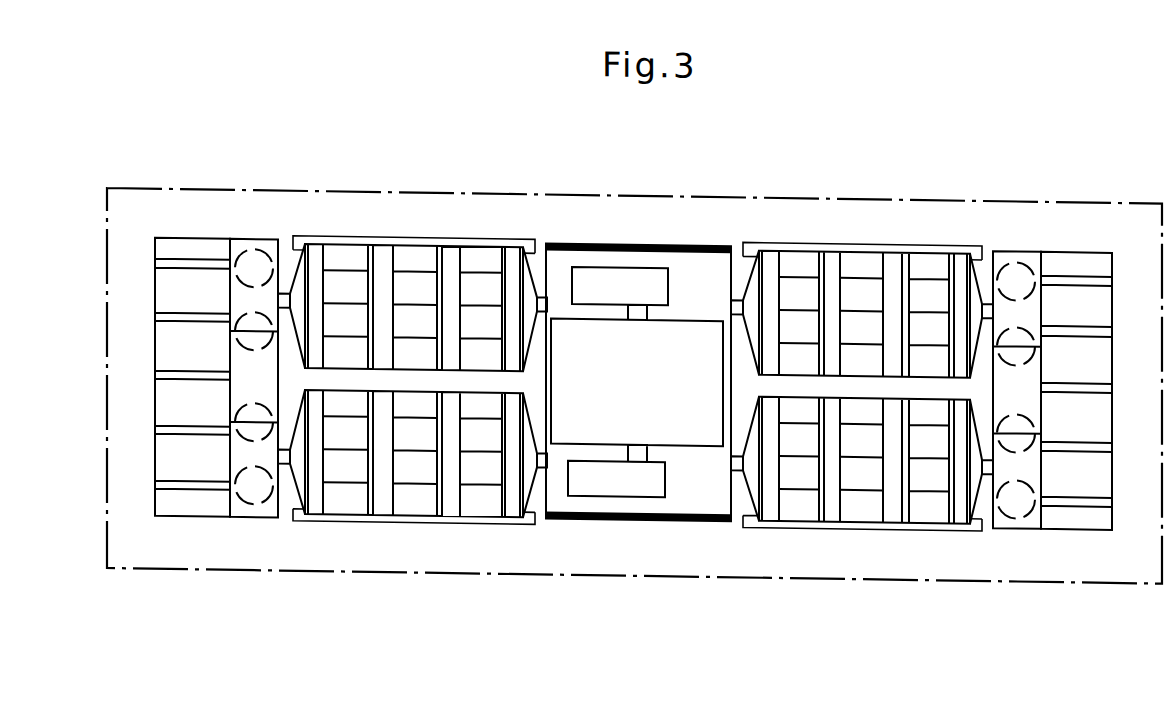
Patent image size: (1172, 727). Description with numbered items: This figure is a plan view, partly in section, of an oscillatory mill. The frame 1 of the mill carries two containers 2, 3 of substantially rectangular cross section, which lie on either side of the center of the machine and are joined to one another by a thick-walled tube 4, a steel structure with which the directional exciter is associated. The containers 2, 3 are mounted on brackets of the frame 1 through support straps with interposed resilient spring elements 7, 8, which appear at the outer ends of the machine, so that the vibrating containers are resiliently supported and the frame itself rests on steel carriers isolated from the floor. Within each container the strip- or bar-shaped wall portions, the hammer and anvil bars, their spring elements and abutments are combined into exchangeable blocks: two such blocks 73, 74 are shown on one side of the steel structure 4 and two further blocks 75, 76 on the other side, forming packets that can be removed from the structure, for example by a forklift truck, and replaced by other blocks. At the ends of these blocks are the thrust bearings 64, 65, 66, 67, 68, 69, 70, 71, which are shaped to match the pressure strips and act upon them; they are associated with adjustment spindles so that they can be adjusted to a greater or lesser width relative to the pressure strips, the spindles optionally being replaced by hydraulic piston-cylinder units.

The frame 1 is at (205, 398).
The container 2 is at (412, 256).
The container 3 is at (862, 264).
The thick-walled tube 4 is at (668, 237).
The resilient spring element 7 is at (254, 266).
The resilient spring element 8 is at (1017, 268).
The thrust bearing 64 is at (752, 295).
The thrust bearing 65 is at (752, 447).
The thrust bearing 66 is at (958, 272).
The thrust bearing 67 is at (955, 482).
The thrust bearing 68 is at (512, 264).
The thrust bearing 69 is at (510, 494).
The thrust bearing 70 is at (315, 255).
The thrust bearing 71 is at (313, 464).
The exchangeable block 73 is at (860, 497).
The exchangeable block 74 is at (860, 251).
The exchangeable block 75 is at (406, 493).
The exchangeable block 76 is at (407, 251).